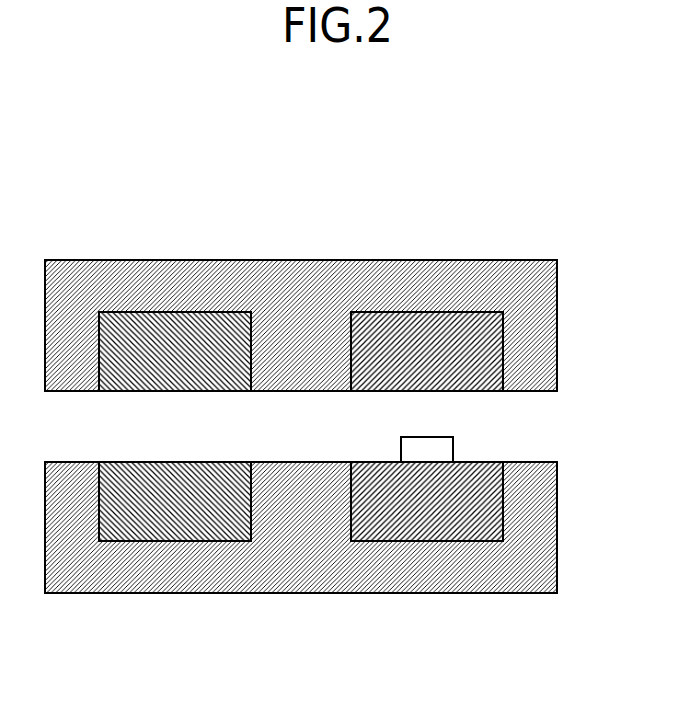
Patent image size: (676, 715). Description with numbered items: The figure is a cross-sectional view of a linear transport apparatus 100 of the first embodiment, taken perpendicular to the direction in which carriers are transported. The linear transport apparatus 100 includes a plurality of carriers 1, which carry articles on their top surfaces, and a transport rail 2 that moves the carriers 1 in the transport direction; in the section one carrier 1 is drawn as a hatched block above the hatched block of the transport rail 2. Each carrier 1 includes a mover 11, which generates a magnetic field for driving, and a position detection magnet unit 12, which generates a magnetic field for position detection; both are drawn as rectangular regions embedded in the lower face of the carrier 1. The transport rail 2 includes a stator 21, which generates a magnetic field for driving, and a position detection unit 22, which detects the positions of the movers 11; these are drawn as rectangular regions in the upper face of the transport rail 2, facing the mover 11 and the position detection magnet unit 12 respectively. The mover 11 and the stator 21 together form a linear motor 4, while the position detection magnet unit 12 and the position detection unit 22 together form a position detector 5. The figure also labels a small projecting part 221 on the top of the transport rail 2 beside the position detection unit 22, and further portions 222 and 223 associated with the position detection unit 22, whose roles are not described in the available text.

The linear transport apparatus 100 is at (300, 134).
The carrier 1 is at (268, 272).
The transport rail 2 is at (286, 562).
The linear motor 4 is at (175, 426).
The position detector 5 is at (427, 426).
The mover 11 is at (175, 325).
The position detection magnet unit 12 is at (427, 322).
The stator 21 is at (176, 528).
The position detection unit 22 is at (427, 530).
The protruding portion 221 is at (453, 444).
The electrode body portion 222 is at (427, 501).
The bonding portion 223 is at (427, 501).